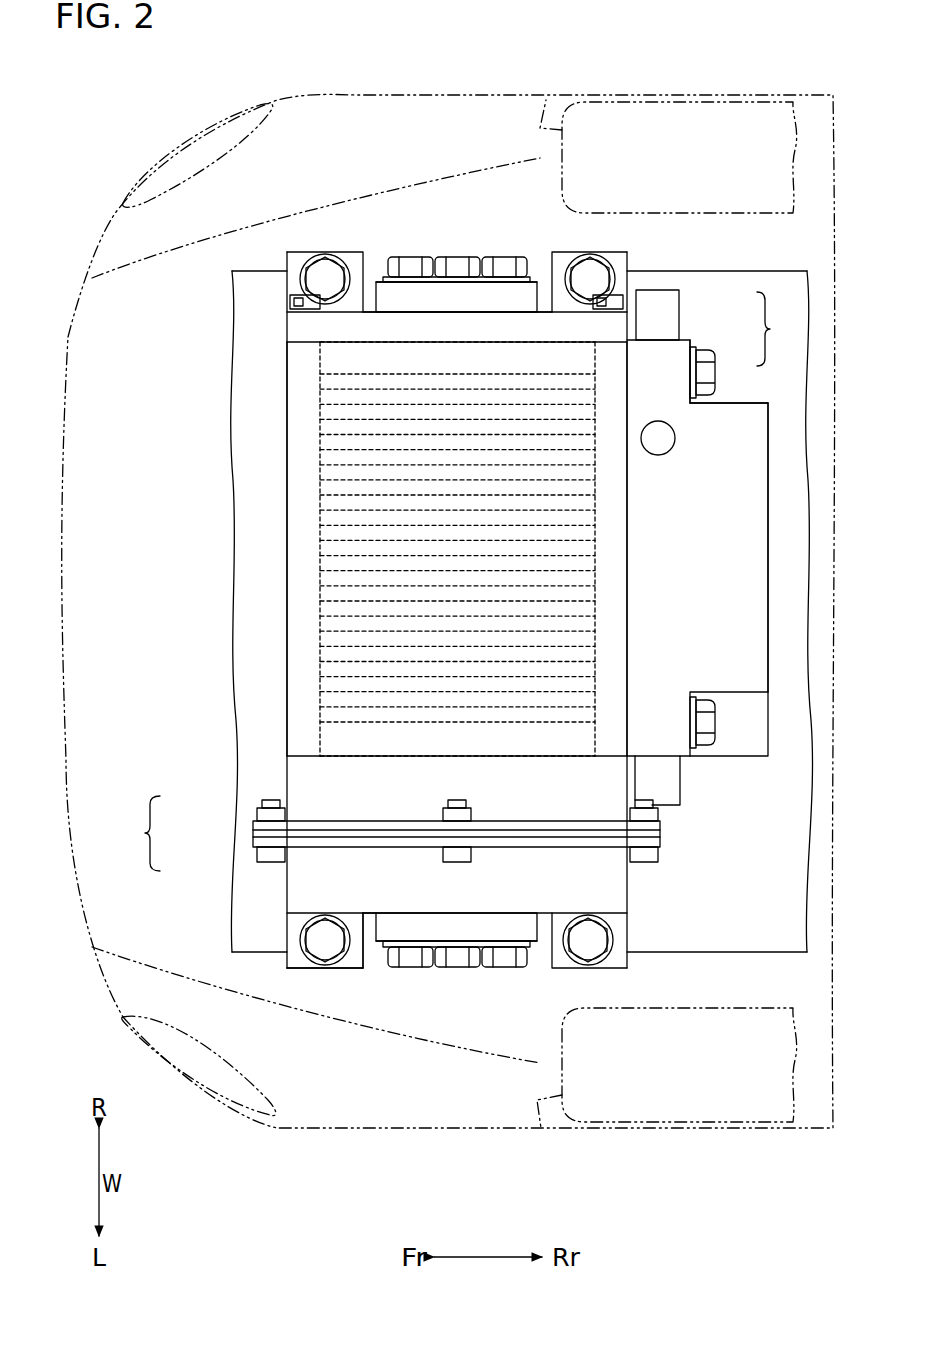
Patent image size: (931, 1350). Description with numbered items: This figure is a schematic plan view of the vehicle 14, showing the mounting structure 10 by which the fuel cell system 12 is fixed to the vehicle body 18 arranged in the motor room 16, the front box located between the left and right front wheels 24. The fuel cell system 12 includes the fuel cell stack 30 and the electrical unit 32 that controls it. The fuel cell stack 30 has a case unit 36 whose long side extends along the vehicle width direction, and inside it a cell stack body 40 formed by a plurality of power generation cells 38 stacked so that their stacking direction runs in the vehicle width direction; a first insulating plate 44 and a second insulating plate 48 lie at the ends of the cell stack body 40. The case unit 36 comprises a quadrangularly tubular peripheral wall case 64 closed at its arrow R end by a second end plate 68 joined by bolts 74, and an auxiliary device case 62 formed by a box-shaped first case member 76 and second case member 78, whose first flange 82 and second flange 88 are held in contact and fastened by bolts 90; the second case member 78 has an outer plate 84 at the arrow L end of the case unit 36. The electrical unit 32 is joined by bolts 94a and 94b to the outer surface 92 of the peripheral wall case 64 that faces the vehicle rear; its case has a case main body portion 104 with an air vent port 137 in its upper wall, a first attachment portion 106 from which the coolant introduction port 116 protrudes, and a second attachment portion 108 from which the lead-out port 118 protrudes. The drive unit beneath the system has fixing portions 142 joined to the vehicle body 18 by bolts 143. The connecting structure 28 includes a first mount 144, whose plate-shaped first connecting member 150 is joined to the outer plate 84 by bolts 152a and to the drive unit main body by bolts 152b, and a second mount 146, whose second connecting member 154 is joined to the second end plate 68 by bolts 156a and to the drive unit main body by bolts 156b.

The mounting structure 10 is at (327, 226).
The fuel cell system 12 is at (776, 329).
The vehicle 14 is at (100, 243).
The motor room 16 is at (360, 1000).
The vehicle body 18 is at (712, 940).
The front wheels 24 is at (546, 100).
The connecting structure 28 is at (357, 983).
The fuel cell stack 30 is at (632, 362).
The electrical unit 32 is at (739, 399).
The case unit 36 is at (286, 325).
The power generation cells 38 is at (323, 672).
The cell stack body 40 is at (308, 516).
The first insulating plate 44 is at (323, 741).
The second insulating plate 48 is at (324, 359).
The auxiliary device case 62 is at (139, 833).
The peripheral wall case 64 is at (287, 588).
The second end plate 68 is at (498, 325).
The bolts 74 is at (605, 268).
The first case member 76 is at (258, 827).
The second case member 78 is at (258, 839).
The first flange 82 is at (360, 825).
The outer plate 84 is at (410, 952).
The second flange 88 is at (339, 839).
The bolts 90 is at (645, 860).
The outer surface 92 is at (627, 553).
The bolts 94a is at (705, 717).
The bolts 94b is at (707, 375).
The case main body portion 104 is at (737, 633).
The first attachment portion 106 is at (662, 722).
The second attachment portion 108 is at (665, 372).
The introduction port 116 is at (668, 792).
The lead-out port 118 is at (665, 296).
The air vent port 137 is at (658, 445).
The fixing portions 142 is at (627, 260).
The bolts 143 is at (590, 258).
The first mount 144 is at (453, 980).
The second mount 146 is at (435, 232).
The first connecting member 150 is at (515, 930).
The bolts 152a is at (417, 960).
The bolts 152b is at (460, 958).
The second connecting member 154 is at (460, 295).
The bolts 156a is at (412, 265).
The bolts 156b is at (450, 262).